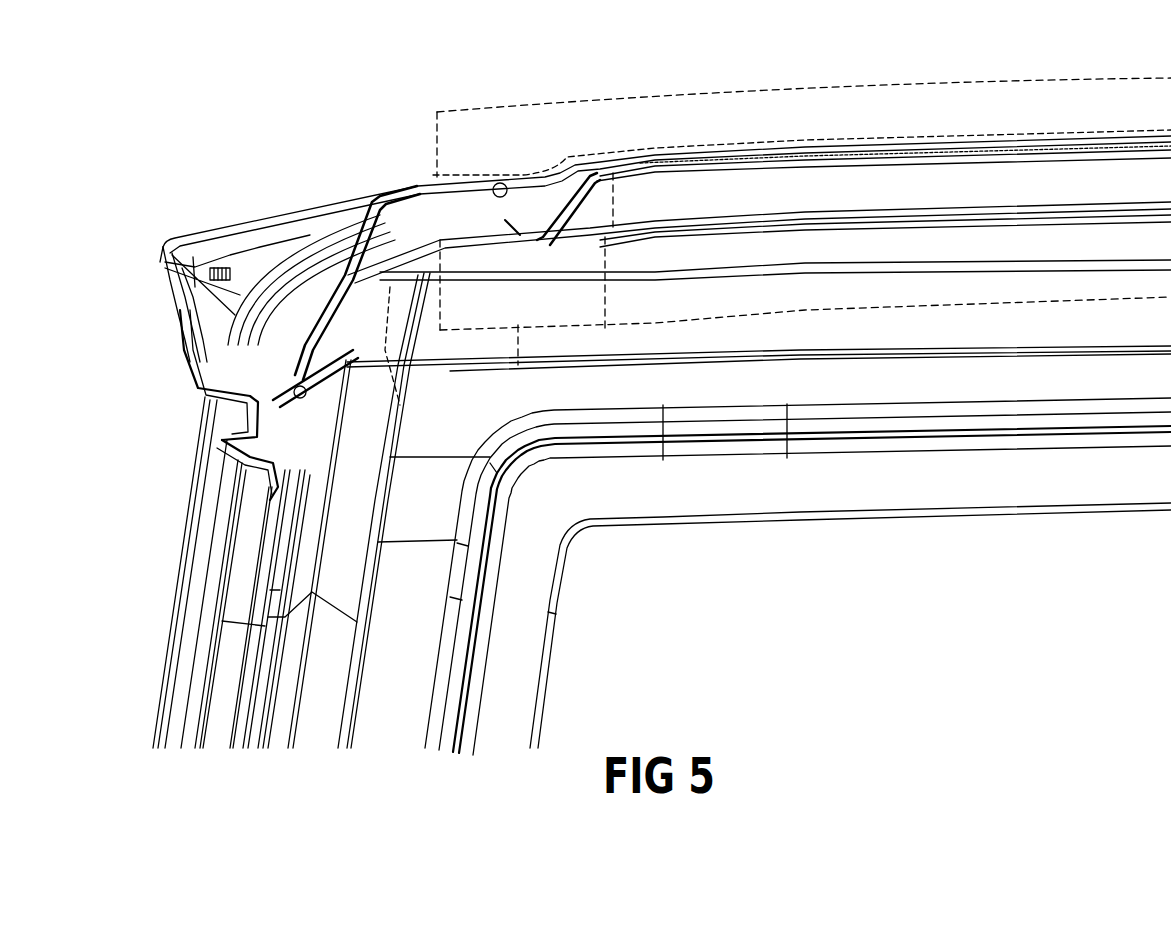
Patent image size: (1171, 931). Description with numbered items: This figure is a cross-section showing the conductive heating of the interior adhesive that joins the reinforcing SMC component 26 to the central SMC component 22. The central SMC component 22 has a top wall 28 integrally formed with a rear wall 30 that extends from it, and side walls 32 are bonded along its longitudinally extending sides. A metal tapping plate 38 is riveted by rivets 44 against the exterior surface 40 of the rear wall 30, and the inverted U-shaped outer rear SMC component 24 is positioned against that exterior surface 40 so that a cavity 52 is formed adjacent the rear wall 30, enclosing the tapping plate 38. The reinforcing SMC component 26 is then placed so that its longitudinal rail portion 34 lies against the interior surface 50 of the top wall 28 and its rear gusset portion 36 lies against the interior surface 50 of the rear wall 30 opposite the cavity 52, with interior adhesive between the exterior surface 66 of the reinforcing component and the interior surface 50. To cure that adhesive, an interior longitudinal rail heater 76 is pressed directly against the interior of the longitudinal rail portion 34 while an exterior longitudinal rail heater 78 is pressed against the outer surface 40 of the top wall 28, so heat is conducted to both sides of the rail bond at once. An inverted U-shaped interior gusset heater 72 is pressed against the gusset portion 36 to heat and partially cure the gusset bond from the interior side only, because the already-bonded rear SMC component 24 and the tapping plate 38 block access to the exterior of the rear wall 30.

The central SMC component 22 is at (689, 130).
The outer rear SMC component 24 is at (211, 193).
The reinforcing SMC component 26 is at (490, 248).
The top wall 28 is at (567, 157).
The rear wall 30 is at (233, 363).
The side walls 32 is at (978, 487).
The longitudinal rail portion 34 is at (700, 195).
The rear gusset portion 36 is at (422, 273).
The tapping plate 38 is at (360, 260).
The exterior surface 40 is at (520, 178).
The rivets 44 is at (350, 262).
The interior surface 50 is at (303, 400).
The cavity 52 is at (190, 300).
The exterior surface 66 is at (1068, 140).
The interior gusset heater 72 is at (400, 410).
The interior longitudinal rail heater 76 is at (518, 365).
The exterior longitudinal rail heater 78 is at (1005, 80).